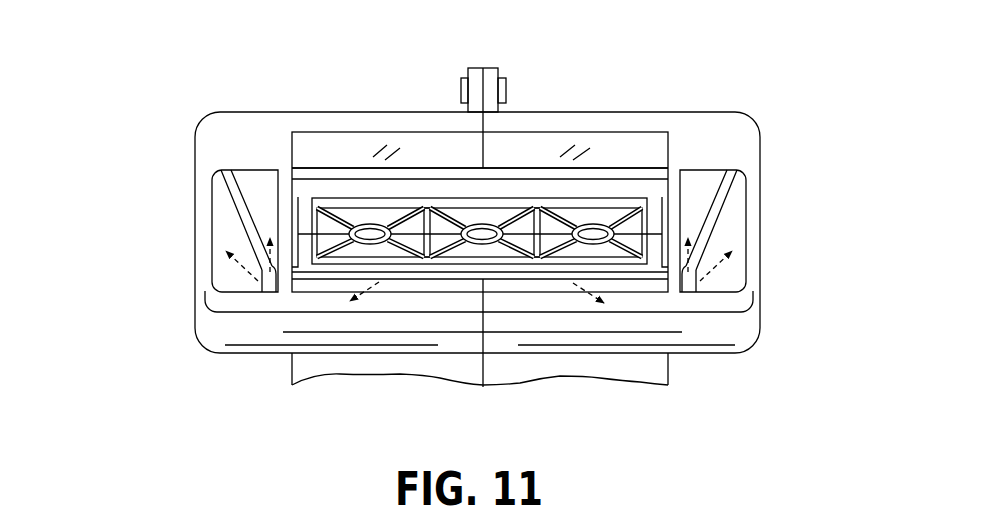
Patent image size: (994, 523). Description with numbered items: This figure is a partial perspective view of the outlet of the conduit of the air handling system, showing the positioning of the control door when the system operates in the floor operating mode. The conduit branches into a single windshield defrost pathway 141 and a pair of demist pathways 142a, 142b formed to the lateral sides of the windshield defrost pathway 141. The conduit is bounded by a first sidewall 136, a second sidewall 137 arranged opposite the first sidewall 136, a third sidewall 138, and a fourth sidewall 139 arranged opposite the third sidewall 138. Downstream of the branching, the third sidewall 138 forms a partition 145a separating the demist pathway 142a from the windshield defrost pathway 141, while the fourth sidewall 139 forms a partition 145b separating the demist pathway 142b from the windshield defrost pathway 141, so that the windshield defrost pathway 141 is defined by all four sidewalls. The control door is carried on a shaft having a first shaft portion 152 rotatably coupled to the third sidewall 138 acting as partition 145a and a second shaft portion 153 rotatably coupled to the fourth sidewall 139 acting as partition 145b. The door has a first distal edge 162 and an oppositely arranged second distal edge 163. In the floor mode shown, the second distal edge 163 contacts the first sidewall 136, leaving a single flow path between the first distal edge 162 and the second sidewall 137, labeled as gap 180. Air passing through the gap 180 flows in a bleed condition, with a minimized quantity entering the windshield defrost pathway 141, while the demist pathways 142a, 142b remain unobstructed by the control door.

The first sidewall 136 is at (360, 128).
The second sidewall 137 is at (475, 303).
The third sidewall 138 is at (293, 366).
The fourth sidewall 139 is at (668, 364).
The windshield defrost pathway 141 is at (427, 140).
The demist pathway 142a is at (243, 246).
The demist pathway 142b is at (715, 246).
The partition 145a is at (283, 217).
The partition 145b is at (677, 223).
The first shaft portion 152 is at (295, 198).
The second shaft portion 153 is at (665, 203).
The first distal edge 162 is at (525, 278).
The second distal edge 163 is at (605, 172).
The gap 180 is at (437, 285).